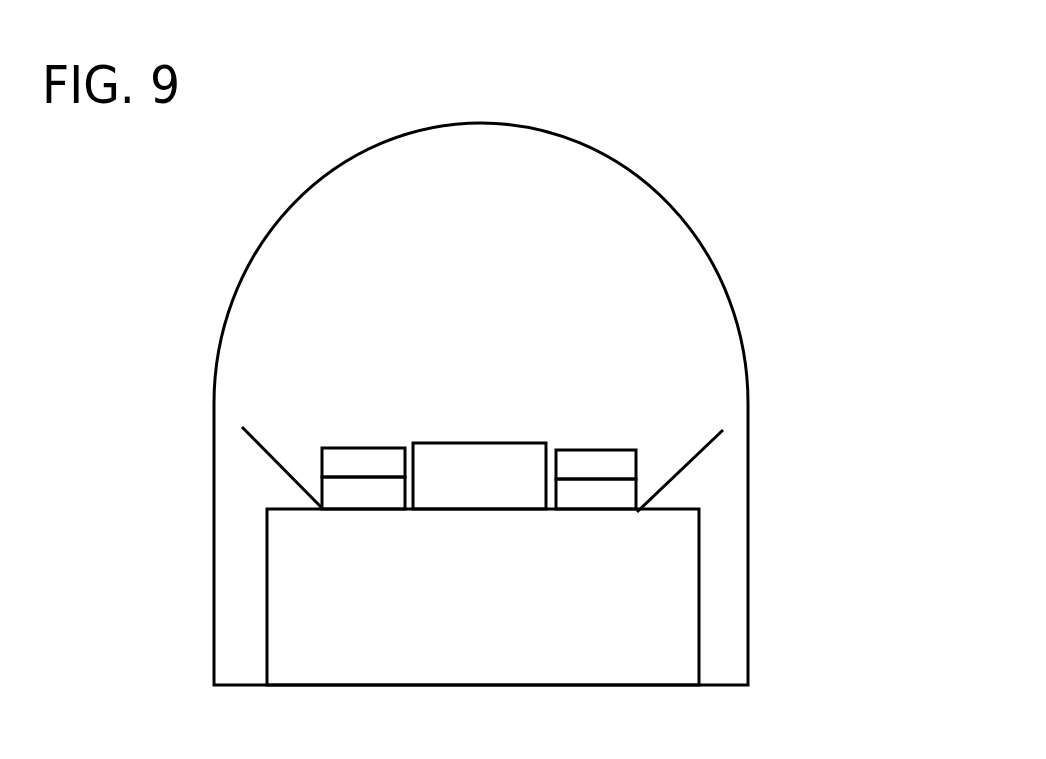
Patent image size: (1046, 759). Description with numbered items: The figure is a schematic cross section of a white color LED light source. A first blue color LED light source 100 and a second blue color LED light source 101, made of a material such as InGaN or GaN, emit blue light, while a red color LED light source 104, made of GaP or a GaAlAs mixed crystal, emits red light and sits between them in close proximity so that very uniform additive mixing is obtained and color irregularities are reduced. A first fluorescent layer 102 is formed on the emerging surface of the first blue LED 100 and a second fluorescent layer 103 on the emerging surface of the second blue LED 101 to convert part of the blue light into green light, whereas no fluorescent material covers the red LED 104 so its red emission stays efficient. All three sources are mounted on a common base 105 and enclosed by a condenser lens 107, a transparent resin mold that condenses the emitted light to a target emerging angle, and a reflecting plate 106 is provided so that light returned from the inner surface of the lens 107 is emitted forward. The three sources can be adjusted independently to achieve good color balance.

The first blue color LED light source 100 is at (618, 497).
The second blue color LED light source 101 is at (338, 497).
The first fluorescent layer 102 is at (615, 465).
The second fluorescent layer 103 is at (325, 460).
The red color LED light source 104 is at (510, 443).
The base 105 is at (700, 592).
The reflecting plate 106 is at (253, 440).
The condenser lens 107 is at (230, 298).